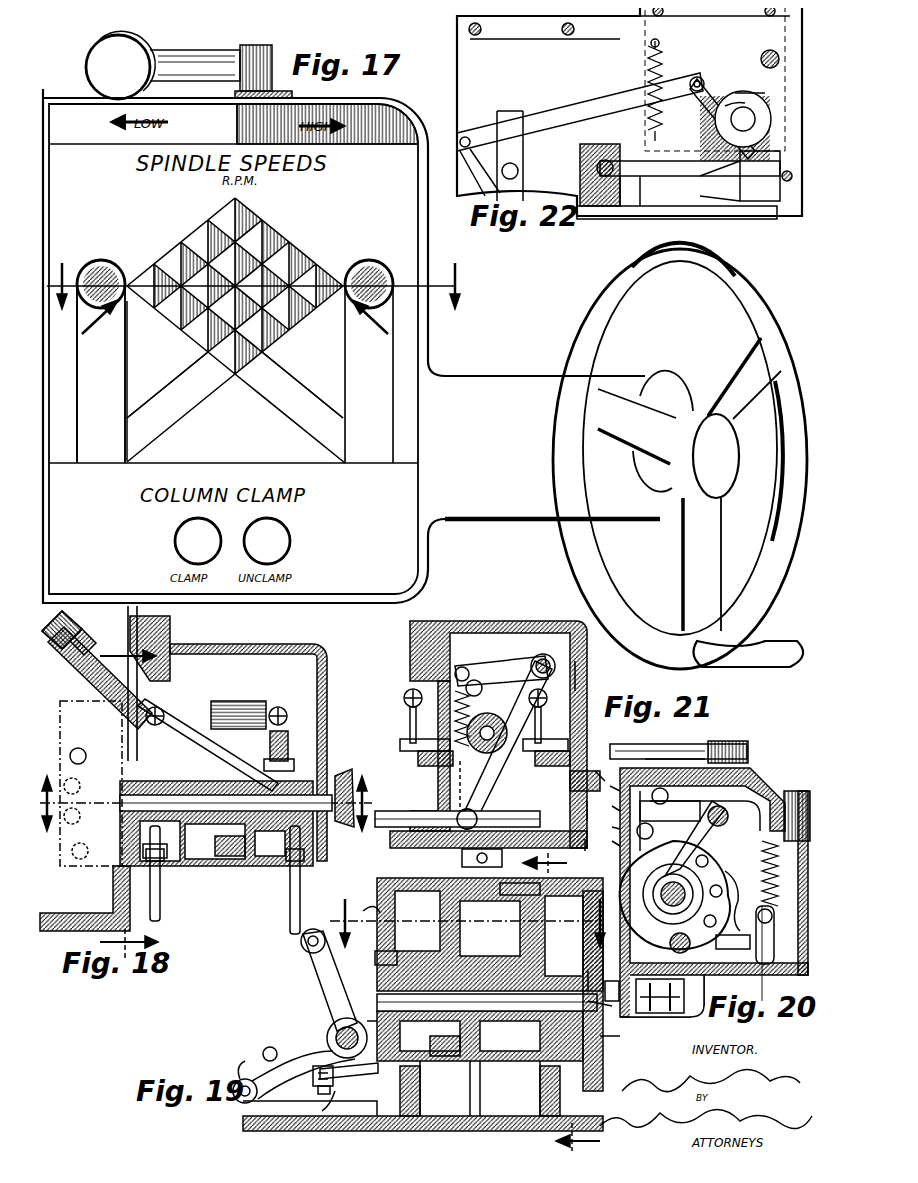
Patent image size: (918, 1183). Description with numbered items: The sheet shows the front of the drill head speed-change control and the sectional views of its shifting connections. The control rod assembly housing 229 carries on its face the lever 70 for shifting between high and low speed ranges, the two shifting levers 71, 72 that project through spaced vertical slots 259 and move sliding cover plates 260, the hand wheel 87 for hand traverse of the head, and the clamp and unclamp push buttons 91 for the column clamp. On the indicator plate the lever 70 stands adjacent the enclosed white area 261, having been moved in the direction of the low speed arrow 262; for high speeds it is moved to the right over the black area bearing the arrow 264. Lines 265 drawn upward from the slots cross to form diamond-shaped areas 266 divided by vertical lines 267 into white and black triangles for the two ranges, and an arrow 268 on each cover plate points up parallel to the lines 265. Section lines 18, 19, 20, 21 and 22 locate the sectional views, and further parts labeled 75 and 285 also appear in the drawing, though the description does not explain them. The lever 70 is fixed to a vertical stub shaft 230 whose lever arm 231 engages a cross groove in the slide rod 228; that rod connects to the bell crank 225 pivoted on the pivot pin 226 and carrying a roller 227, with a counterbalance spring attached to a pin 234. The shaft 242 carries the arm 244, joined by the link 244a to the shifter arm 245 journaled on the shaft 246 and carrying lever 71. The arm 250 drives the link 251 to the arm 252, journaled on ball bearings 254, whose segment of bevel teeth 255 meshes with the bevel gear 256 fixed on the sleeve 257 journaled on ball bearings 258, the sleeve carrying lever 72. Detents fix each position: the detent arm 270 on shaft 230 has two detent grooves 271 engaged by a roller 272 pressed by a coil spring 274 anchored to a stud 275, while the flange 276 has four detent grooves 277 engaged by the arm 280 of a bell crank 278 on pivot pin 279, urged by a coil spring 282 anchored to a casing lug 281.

In FIG. 17, the section line 18- 18 is at (253, 276).
In FIG. 18, the section line 19- 19 is at (204, 795).
In FIG. 21, the section line 20- 20 is at (553, 864).
In FIG. 19, the section line 20- 20 is at (585, 1138).
In FIG. 21, the section line 21- 21 is at (502, 838).
In FIG. 19, the section line 21- 21 is at (462, 913).
In FIG. 18, the section line 22- 22 is at (125, 782).
In FIG. 17, the lever 70 is at (90, 62).
In FIG. 20, the lever 70 is at (690, 745).
In FIG. 17, the shifting lever 71 is at (103, 272).
In FIG. 18, the shifting lever 71 is at (160, 880).
In FIG. 17, the shifting lever 72 is at (369, 270).
In FIG. 18, the shifting lever 72 is at (290, 900).
In FIG. 21, the shifting lever 72 is at (590, 845).
In FIG. 20, the shifting lever 72 is at (609, 838).
In FIG. 17, the button slot 75 is at (170, 262).
In FIG. 21, the button slot 75 is at (590, 806).
In FIG. 17, the hand wheel 87 is at (580, 352).
In FIG. 17, the clamp and unclamp push buttons 91 is at (256, 537).
In FIG. 20, the clamp and unclamp push buttons 91 is at (608, 996).
In FIG. 19, the clamp and unclamp push buttons 91 is at (602, 1006).
In FIG. 19, the bell crank 225 is at (330, 985).
In FIG. 19, the pivot pin 226 is at (330, 1030).
In FIG. 19, the roller 227 is at (288, 1045).
In FIG. 22, the slide rod 228 is at (770, 50).
In FIG. 21, the slide rod 228 is at (525, 765).
In FIG. 20, the slide rod 228 is at (658, 790).
In FIG. 22, the control rod assembly housing 229 is at (780, 215).
In FIG. 18, the control rod assembly housing 229 is at (335, 682).
In FIG. 21, the control rod assembly housing 229 is at (588, 645).
In FIG. 21, the vertical stub shaft 230 is at (510, 775).
In FIG. 21, the lever arm 231 is at (495, 755).
In FIG. 20, the lever arm 231 is at (690, 733).
In FIG. 19, the pin 234 is at (240, 1080).
In FIG. 22, the shaft 242 is at (525, 145).
In FIG. 22, the arm 244 is at (470, 175).
In FIG. 19, the arm 244 is at (380, 920).
In FIG. 22, the link 244a is at (583, 108).
In FIG. 18, the link 244a is at (150, 645).
In FIG. 22, the shifter arm 245 is at (712, 95).
In FIG. 18, the shifter arm 245 is at (150, 780).
In FIG. 22, the shaft 246 is at (748, 110).
In FIG. 18, the shaft 246 is at (220, 800).
In FIG. 19, the shaft 246 is at (375, 1005).
In FIG. 21, the arm 250 is at (462, 860).
In FIG. 22, the link 251 is at (628, 205).
In FIG. 18, the link 251 is at (85, 672).
In FIG. 19, the link 251 is at (314, 1086).
In FIG. 22, the arm 252 is at (730, 190).
In FIG. 18, the arm 252 is at (130, 740).
In FIG. 21, the arm 252 is at (462, 830).
In FIG. 19, the arm 252 is at (360, 1080).
In FIG. 19, the ball bearings 254 is at (400, 1090).
In FIG. 18, the segment of bevel teeth 255 is at (190, 858).
In FIG. 19, the segment of bevel teeth 255 is at (480, 1063).
In FIG. 18, the bevel gear 256 is at (228, 858).
In FIG. 19, the bevel gear 256 is at (480, 1038).
In FIG. 18, the sleeve 257 is at (239, 798).
In FIG. 19, the sleeve 257 is at (555, 1035).
In FIG. 18, the ball bearings 258 is at (268, 858).
In FIG. 20, the ball bearings 258 is at (613, 1049).
In FIG. 19, the ball bearings 258 is at (490, 985).
In FIG. 17, the vertical slots 259 is at (90, 400).
In FIG. 17, the sliding cover plate 260 is at (105, 370).
In FIG. 18, the sliding cover plate 260 is at (125, 870).
In FIG. 21, the sliding cover plate 260 is at (610, 772).
In FIG. 20, the sliding cover plate 260 is at (604, 781).
In FIG. 17, the enclosed white area 261 is at (164, 126).
In FIG. 17, the low speed arrow 262 is at (168, 124).
In FIG. 17, the arrow 264 is at (330, 130).
In FIG. 17, the lines 265 is at (330, 312).
In FIG. 17, the diamond-shaped areas 266 is at (205, 352).
In FIG. 17, the vertical lines 267 is at (275, 248).
In FIG. 17, the arrow 268 is at (388, 320).
In FIG. 21, the detent arm 270 is at (552, 738).
In FIG. 19, the detent arm 270 is at (525, 893).
In FIG. 21, the detent grooves 271 is at (462, 708).
In FIG. 21, the roller 272 is at (420, 708).
In FIG. 21, the coil spring 274 is at (415, 738).
In FIG. 19, the coil spring 274 is at (375, 958).
In FIG. 21, the stud 275 is at (485, 655).
In FIG. 20, the stud 275 is at (606, 812).
In FIG. 19, the stud 275 is at (601, 970).
In FIG. 18, the flange 276 is at (295, 738).
In FIG. 20, the flange 276 is at (675, 897).
In FIG. 20, the detent grooves 277 is at (733, 949).
In FIG. 21, the bell crank 278 is at (588, 672).
In FIG. 20, the bell crank 278 is at (770, 775).
In FIG. 21, the pivot pin 279 is at (597, 764).
In FIG. 20, the pivot pin 279 is at (625, 738).
In FIG. 20, the arm 280 is at (712, 835).
In FIG. 22, the lug 281 is at (655, 185).
In FIG. 18, the lug 281 is at (225, 712).
In FIG. 20, the lug 281 is at (768, 965).
In FIG. 18, the coil spring 282 is at (285, 704).
In FIG. 21, the coil spring 282 is at (552, 709).
In FIG. 20, the coil spring 282 is at (740, 960).
In FIG. 20, the pivot pin 285 is at (770, 825).